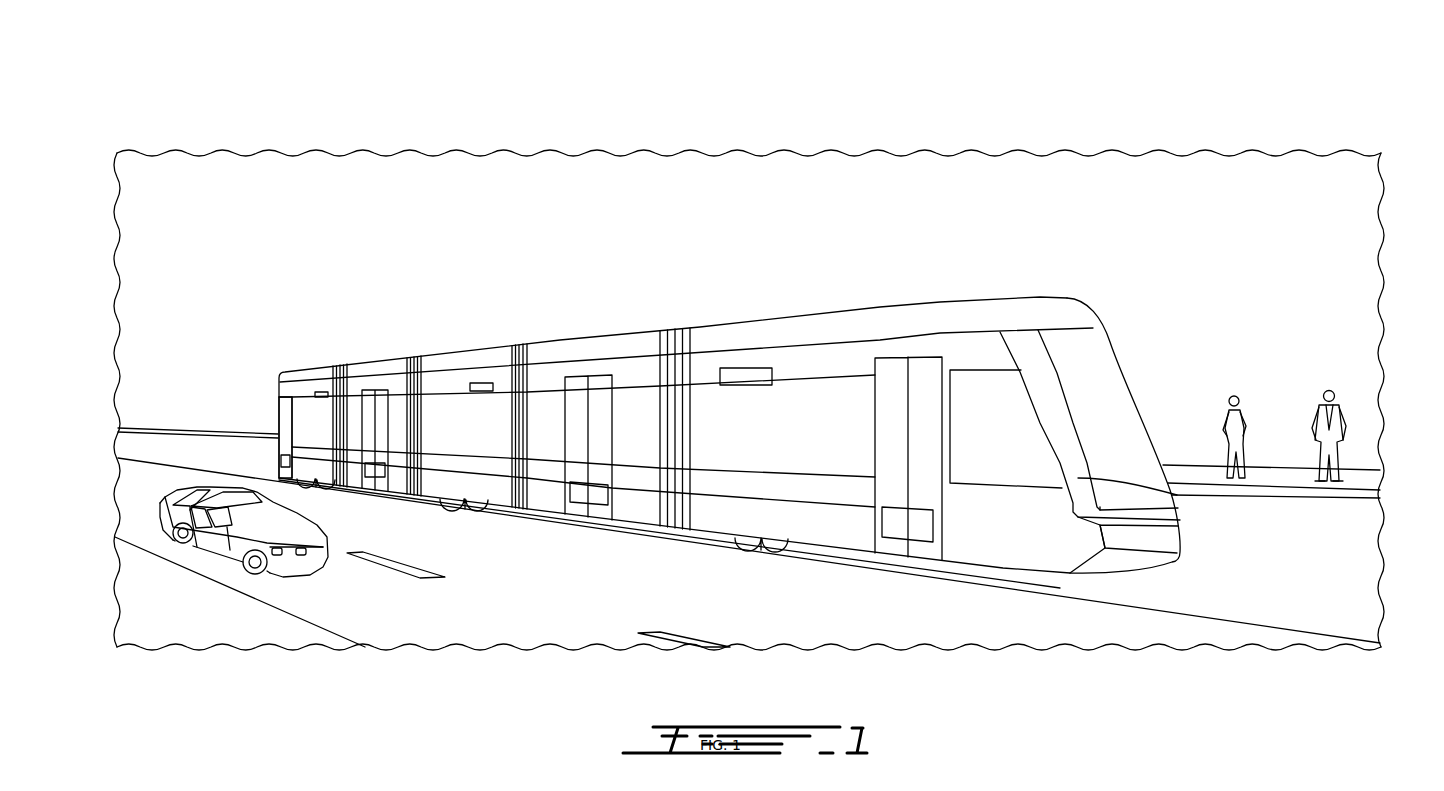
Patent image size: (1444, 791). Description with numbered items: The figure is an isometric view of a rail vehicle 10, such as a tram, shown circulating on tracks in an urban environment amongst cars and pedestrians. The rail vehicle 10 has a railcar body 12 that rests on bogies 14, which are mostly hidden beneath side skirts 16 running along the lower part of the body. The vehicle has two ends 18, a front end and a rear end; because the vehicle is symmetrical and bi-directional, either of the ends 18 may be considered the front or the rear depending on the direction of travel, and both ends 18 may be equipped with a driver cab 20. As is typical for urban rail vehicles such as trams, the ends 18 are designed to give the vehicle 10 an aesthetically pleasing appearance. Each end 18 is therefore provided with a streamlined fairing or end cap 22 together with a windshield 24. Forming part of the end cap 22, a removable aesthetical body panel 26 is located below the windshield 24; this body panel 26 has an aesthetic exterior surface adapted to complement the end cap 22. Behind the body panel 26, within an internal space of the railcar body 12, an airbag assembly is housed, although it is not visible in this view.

The rail vehicle 10 is at (752, 375).
The railcar body 12 is at (858, 391).
The bogies 14 is at (823, 552).
The side skirts 16 is at (755, 521).
The ends 18 is at (280, 394).
The driver cab 20 is at (1120, 422).
The end cap 22 is at (1177, 495).
The windshield 24 is at (1117, 388).
The aesthetical body panel 26 is at (1160, 538).